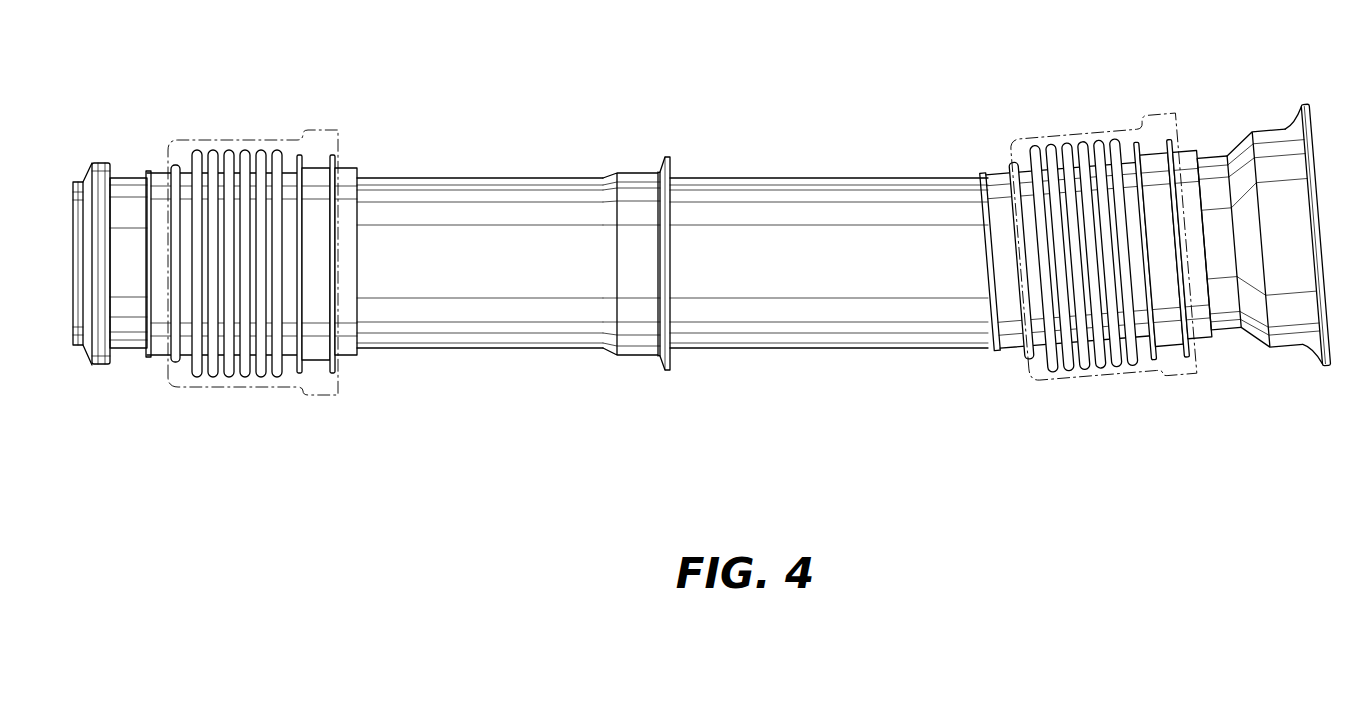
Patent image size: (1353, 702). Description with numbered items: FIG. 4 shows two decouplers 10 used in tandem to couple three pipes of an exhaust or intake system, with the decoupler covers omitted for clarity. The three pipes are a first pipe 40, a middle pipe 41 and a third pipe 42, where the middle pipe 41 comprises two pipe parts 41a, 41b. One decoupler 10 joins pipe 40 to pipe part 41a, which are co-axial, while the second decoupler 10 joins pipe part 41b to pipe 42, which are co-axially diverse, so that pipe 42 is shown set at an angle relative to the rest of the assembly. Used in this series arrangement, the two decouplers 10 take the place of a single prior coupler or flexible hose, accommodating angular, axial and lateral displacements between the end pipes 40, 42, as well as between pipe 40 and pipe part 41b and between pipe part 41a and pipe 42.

The decoupler 10 is at (327, 130).
The pipe 40 is at (127, 177).
The pipe 41 is at (672, 219).
The pipe part 41a is at (514, 178).
The pipe part 41b is at (880, 178).
The pipe 42 is at (1257, 130).